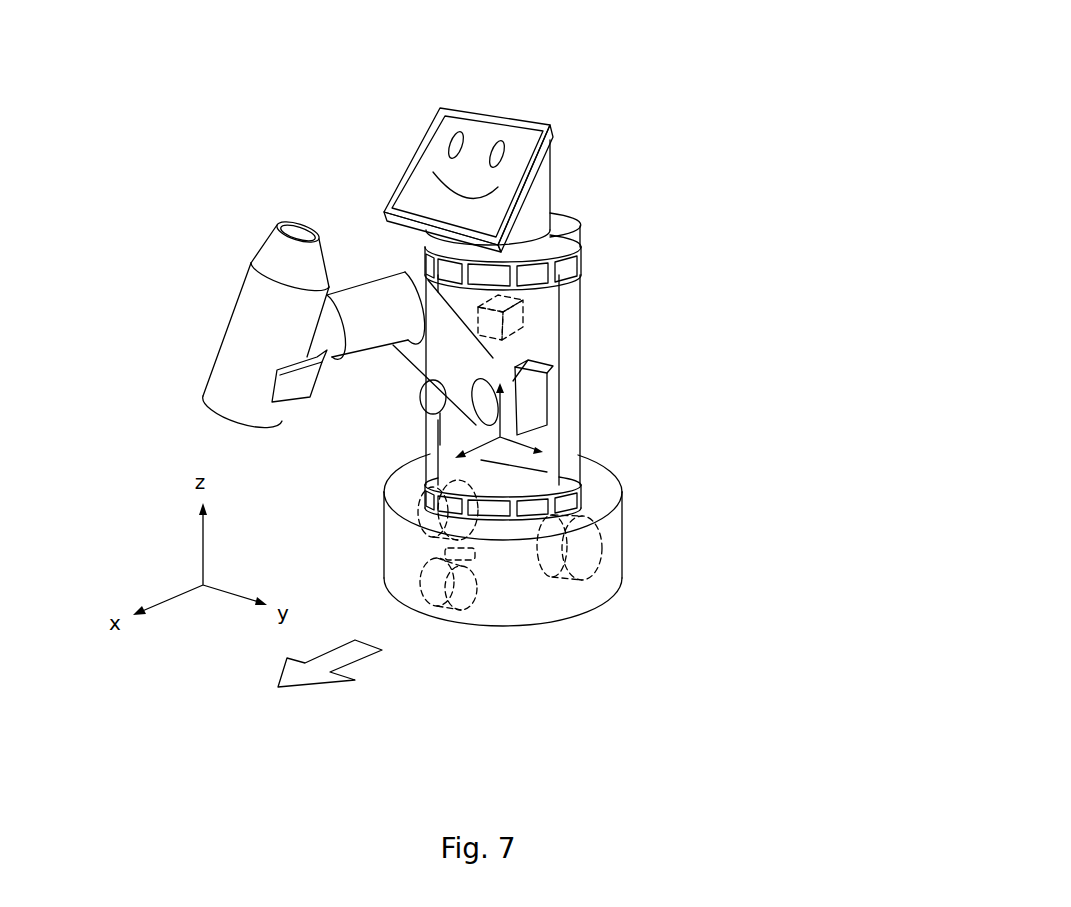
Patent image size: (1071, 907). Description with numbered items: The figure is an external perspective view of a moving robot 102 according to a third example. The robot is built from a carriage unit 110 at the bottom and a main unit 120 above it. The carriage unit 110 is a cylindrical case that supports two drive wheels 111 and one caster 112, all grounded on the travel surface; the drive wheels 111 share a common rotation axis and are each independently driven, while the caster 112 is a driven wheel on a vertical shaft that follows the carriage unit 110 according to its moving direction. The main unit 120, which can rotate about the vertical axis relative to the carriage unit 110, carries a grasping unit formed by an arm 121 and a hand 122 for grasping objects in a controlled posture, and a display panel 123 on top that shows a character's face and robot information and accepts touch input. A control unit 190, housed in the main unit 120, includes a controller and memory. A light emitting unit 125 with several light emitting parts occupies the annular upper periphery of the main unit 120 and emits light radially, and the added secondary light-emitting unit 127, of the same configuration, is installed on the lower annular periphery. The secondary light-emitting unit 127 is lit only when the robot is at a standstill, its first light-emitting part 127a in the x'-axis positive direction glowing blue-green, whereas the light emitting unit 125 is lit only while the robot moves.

The moving robot 102 is at (668, 163).
The carriage unit 110 is at (610, 525).
The drive wheel 111 is at (593, 563).
The caster 112 is at (468, 616).
The main unit 120 is at (567, 395).
The arm 121 is at (442, 353).
The hand 122 is at (295, 387).
The display panel 123 is at (442, 122).
The light emitting unit 125 is at (578, 262).
The secondary light-emitting unit 127 is at (580, 485).
The first light-emitting part 127a is at (447, 506).
The control unit 190 is at (525, 318).